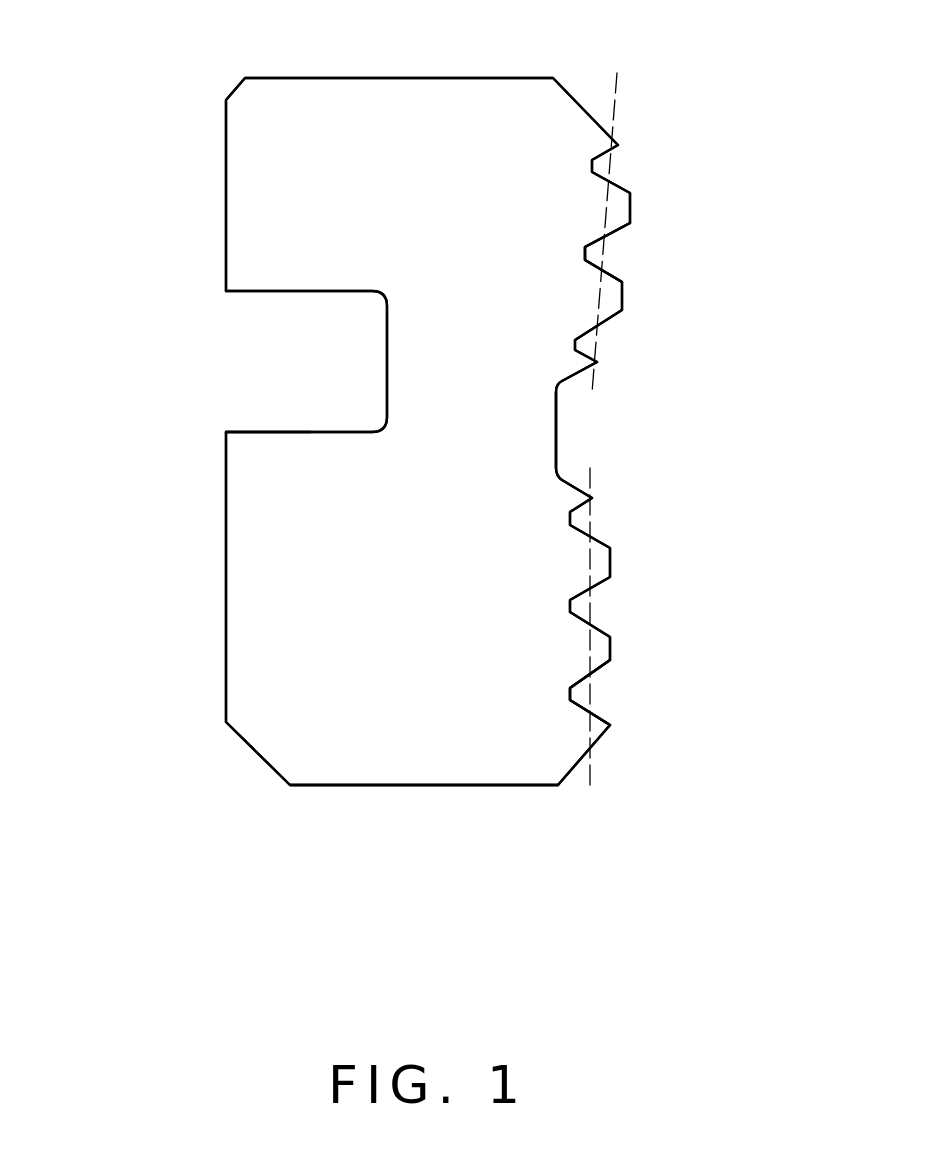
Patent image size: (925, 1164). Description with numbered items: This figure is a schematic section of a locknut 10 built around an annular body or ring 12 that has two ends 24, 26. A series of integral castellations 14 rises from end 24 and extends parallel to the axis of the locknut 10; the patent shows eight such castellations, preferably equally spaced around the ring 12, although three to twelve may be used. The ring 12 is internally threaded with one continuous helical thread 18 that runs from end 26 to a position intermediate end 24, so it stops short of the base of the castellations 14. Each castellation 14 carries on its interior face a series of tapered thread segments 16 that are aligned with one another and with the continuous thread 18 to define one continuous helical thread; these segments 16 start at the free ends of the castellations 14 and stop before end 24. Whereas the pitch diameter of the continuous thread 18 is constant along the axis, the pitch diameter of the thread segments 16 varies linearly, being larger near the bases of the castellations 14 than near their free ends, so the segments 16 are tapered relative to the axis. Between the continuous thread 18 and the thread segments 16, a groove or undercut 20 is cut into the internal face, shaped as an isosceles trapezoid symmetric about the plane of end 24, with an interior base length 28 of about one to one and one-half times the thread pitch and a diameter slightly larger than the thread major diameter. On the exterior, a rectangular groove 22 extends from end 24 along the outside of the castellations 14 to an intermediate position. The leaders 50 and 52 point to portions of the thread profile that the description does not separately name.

The locknut 10 is at (680, 820).
The annular body or ring 12 is at (320, 678).
The castellations 14 is at (260, 145).
The tapered thread segments 16 is at (668, 205).
The continuous helical thread 18 is at (650, 593).
The groove or undercut 20 is at (655, 387).
The rectangular groove 22 is at (200, 355).
The end 24 is at (262, 432).
The end 26 is at (430, 785).
The interior base length 28 is at (556, 428).
The upper thread flank 50 is at (602, 252).
The lower thread flank 52 is at (590, 697).